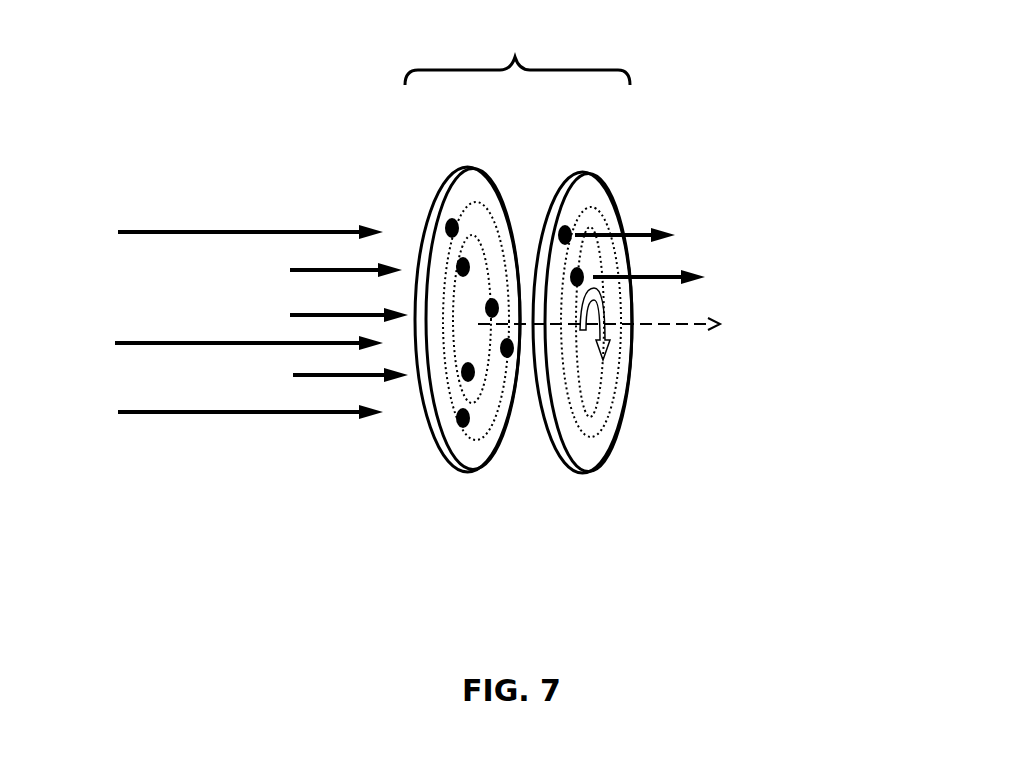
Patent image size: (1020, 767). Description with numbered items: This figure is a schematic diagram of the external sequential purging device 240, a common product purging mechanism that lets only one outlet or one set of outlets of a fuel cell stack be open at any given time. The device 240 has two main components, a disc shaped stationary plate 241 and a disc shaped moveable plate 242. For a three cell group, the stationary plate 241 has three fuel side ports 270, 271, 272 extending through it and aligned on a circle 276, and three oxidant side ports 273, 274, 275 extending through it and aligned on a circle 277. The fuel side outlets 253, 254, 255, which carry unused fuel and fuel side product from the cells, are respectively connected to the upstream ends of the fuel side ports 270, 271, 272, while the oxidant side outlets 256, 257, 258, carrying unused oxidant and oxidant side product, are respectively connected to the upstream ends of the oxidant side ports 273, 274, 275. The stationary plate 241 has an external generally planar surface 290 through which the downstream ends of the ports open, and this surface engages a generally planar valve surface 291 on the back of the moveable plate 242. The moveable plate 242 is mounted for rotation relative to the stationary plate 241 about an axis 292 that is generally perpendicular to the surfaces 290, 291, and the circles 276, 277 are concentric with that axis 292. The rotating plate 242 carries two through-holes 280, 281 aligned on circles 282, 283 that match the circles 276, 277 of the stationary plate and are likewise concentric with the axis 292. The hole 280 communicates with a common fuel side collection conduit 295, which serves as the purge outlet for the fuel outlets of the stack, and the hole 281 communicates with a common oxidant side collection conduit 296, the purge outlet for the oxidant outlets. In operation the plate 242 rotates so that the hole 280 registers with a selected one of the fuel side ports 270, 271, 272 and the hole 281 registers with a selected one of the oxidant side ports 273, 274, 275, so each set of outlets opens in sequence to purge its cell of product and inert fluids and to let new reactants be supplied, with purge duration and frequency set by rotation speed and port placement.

The external sequential purging device 240 is at (517, 48).
The stationary plate 241 is at (405, 338).
The moveable plate 242 is at (622, 326).
The fuel side product outlet 253 is at (128, 224).
The fuel side product outlet 254 is at (137, 352).
The fuel side product outlet 255 is at (183, 418).
The oxidant side product outlet 256 is at (315, 262).
The oxidant side product outlet 257 is at (283, 313).
The oxidant side product outlet 258 is at (312, 378).
The fuel side port 270 is at (439, 211).
The fuel side port 271 is at (510, 368).
The fuel side port 272 is at (449, 438).
The oxidant side port 273 is at (469, 249).
The oxidant side port 274 is at (492, 328).
The oxidant side port 275 is at (453, 388).
The circle 276 is at (440, 253).
The circle 277 is at (457, 351).
The through-hole 280 is at (576, 217).
The through-hole 281 is at (589, 265).
The circle 282 is at (596, 448).
The circle 283 is at (601, 410).
The external generally planar surface 290 is at (468, 185).
The generally planar valve surface 291 is at (534, 224).
The axis 292 is at (666, 333).
The common fuel side collection conduit 295 is at (671, 227).
The common oxidant side collection conduit 296 is at (709, 267).